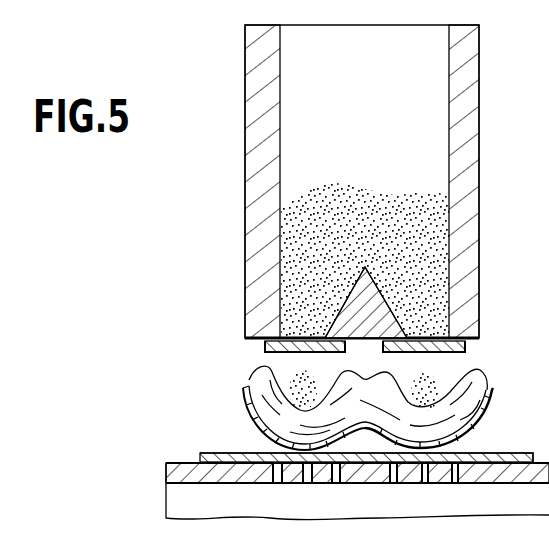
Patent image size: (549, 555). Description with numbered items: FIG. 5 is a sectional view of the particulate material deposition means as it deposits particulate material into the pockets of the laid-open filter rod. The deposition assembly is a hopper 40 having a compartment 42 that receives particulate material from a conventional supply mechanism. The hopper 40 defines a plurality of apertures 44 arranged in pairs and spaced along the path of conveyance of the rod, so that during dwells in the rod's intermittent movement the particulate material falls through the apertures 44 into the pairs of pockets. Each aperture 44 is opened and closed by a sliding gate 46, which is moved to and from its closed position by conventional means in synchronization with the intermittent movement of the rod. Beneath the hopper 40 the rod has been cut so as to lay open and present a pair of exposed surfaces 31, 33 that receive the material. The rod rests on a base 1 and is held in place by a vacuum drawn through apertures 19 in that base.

The hopper 40 is at (478, 86).
The compartment 42 is at (423, 154).
The apertures 44 is at (312, 338).
The sliding gates 46 is at (265, 349).
The exposed surface 31 is at (252, 371).
The exposed surface 33 is at (460, 373).
The substrate layer 1 is at (522, 452).
The apertures 19 is at (425, 466).